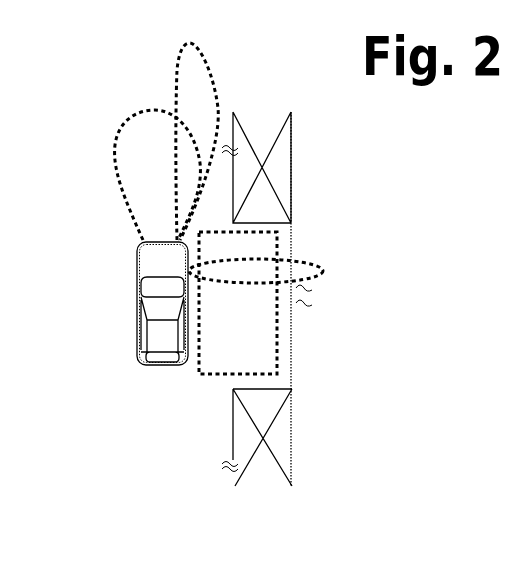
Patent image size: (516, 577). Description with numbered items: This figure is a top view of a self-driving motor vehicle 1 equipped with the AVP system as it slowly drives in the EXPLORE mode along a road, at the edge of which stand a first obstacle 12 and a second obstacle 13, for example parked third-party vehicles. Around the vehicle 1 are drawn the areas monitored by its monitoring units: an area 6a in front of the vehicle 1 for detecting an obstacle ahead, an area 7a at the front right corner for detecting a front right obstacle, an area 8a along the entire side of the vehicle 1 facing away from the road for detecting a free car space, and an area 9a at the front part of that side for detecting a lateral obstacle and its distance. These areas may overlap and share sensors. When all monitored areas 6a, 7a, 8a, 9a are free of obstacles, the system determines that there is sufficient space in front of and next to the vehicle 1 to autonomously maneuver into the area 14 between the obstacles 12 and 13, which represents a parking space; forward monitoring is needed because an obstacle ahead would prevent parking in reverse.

The motor vehicle 1 is at (155, 340).
The area monitored by first front monitoring unit 6a is at (139, 138).
The area monitored by second front right monitoring unit 7a is at (192, 110).
The area monitored by third lateral monitoring unit 8a is at (265, 321).
The area monitored by fourth front lateral monitoring unit 9a is at (296, 268).
The first obstacle 12 is at (257, 408).
The second obstacle 13 is at (258, 183).
The area between the obstacles 14 is at (288, 357).